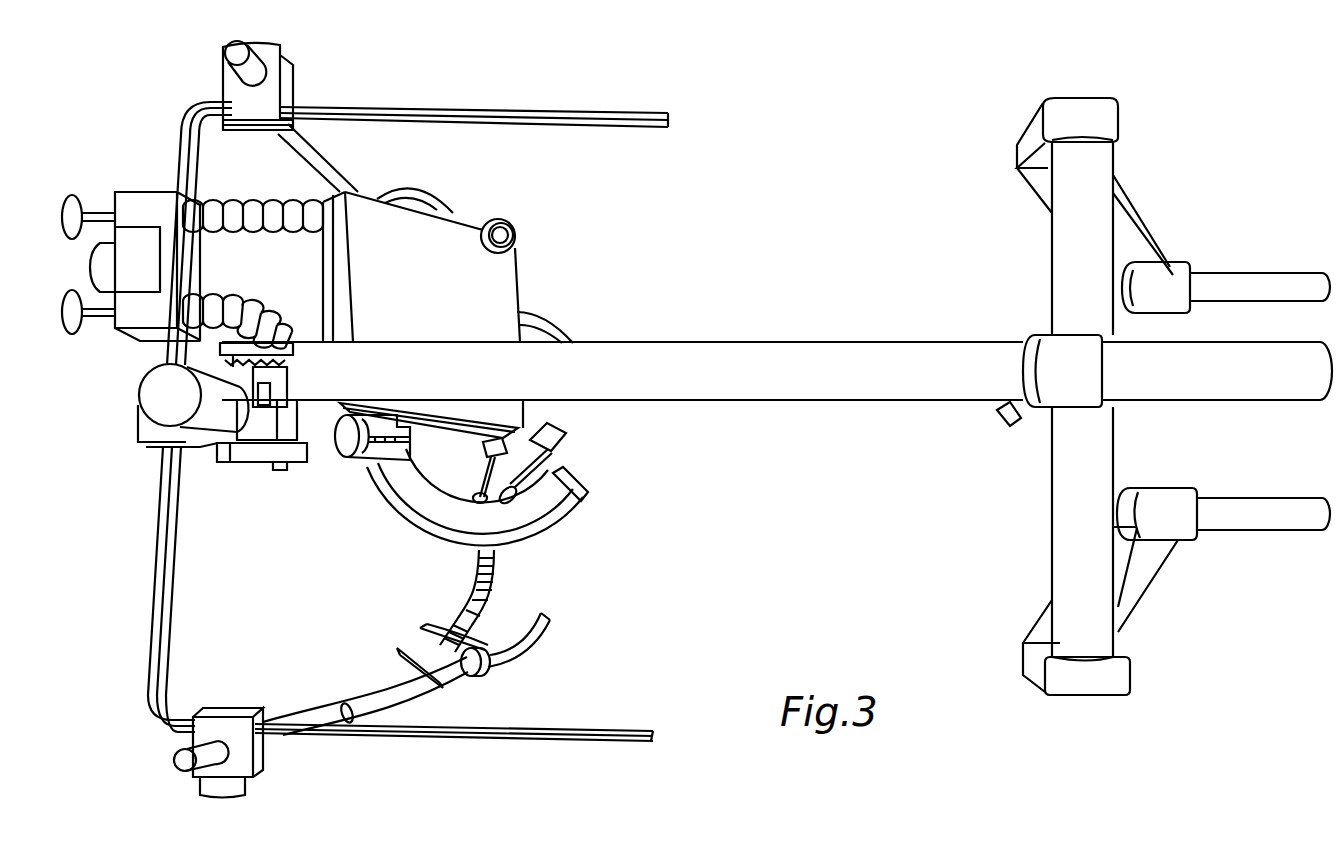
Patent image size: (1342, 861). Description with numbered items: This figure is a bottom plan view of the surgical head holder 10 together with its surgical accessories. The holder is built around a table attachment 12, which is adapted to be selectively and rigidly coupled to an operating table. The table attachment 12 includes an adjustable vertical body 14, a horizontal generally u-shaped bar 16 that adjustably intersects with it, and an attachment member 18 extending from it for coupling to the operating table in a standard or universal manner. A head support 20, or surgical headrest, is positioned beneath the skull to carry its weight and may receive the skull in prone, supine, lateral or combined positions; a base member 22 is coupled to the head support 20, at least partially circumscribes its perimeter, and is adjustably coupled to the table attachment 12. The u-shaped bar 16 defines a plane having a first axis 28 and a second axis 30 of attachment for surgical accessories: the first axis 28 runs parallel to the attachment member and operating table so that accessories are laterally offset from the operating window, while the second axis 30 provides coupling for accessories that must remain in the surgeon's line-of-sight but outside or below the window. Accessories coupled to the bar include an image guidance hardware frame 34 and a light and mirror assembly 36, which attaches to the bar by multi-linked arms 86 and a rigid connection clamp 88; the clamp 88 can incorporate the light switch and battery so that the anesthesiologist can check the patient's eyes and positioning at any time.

The surgical head holder 10 is at (766, 182).
The table attachment 12 is at (1200, 408).
The adjustable vertical body 14 is at (150, 397).
The horizontal generally u-shaped bar 16 is at (158, 602).
The attachment member 18 is at (835, 344).
The head support 20 is at (568, 527).
The base member 22 is at (585, 478).
The first axis of attachment 28 is at (561, 110).
The second axis of attachment 30 is at (176, 162).
The image guidance hardware frame 34 is at (363, 462).
The light and mirror assembly 36 is at (470, 232).
The multi-linked arms 86 is at (242, 203).
The rigid connection clamp 88 is at (120, 192).